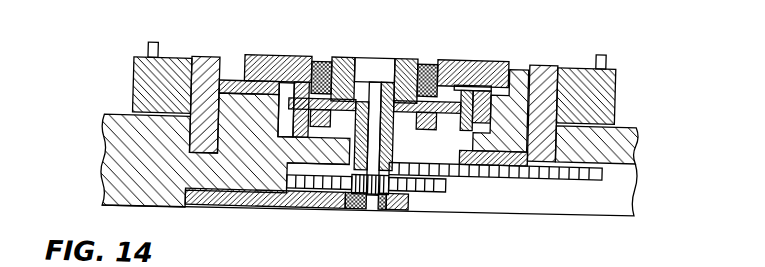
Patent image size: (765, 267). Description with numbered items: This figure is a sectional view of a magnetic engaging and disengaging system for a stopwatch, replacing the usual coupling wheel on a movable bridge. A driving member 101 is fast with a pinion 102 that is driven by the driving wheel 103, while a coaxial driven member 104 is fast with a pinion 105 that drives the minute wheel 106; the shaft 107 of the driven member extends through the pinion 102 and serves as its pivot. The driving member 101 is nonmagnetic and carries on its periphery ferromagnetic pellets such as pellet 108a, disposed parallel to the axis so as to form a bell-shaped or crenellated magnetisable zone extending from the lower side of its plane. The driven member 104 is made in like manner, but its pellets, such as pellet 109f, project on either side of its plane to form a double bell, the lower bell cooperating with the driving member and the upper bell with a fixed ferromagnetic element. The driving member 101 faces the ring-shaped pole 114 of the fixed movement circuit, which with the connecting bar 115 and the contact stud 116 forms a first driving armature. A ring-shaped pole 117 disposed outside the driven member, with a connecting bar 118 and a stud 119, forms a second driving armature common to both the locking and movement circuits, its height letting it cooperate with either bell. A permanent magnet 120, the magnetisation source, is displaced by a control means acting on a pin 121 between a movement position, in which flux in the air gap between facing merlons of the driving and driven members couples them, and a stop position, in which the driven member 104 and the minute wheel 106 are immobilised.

The driving member 101 is at (347, 109).
The pinion 102 is at (388, 160).
The driving wheel 103 is at (580, 172).
The driven member 104 is at (402, 106).
The pinion 105 is at (381, 194).
The minute wheel 106 is at (318, 190).
The shaft 107 is at (358, 156).
The ferromagnetic pellet 108a is at (290, 142).
The ferromagnetic pellet 109f is at (281, 85).
The pole 114 is at (306, 172).
The connecting bar 115 is at (508, 174).
The contact stud 116 is at (543, 72).
The pole 117 is at (485, 88).
The connecting bar 118 is at (232, 91).
The stud 119 is at (198, 76).
The permanent magnet 120 is at (131, 86).
The pin 121 is at (146, 53).